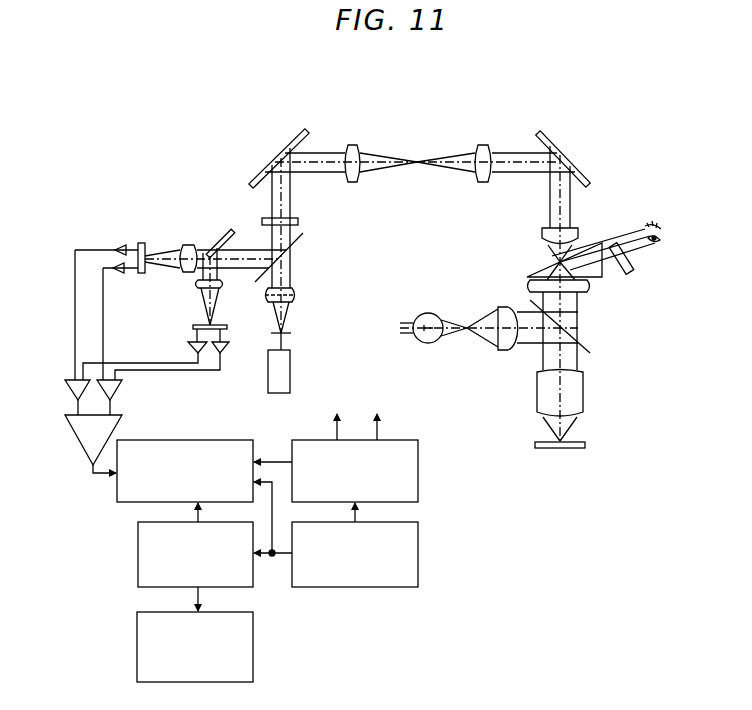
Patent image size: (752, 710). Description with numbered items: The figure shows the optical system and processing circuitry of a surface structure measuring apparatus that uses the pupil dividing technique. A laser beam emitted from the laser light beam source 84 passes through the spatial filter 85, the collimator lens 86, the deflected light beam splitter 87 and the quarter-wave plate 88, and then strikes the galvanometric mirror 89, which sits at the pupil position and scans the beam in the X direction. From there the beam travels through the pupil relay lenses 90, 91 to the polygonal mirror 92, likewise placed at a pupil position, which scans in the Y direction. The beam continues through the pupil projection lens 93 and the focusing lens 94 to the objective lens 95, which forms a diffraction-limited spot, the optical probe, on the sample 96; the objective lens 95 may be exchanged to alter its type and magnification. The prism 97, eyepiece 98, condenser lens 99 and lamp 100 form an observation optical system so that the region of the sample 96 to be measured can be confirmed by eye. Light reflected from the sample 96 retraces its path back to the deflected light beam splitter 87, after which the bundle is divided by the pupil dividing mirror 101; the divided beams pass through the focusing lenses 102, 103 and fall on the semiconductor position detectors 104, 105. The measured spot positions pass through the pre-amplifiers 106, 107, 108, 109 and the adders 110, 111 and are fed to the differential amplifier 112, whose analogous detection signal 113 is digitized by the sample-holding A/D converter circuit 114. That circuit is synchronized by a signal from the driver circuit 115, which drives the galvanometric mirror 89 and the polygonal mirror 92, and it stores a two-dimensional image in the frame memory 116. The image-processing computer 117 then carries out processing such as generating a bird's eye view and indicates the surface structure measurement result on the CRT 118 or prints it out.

The laser light beam source 84 is at (290, 385).
The spatial filter 85 is at (291, 333).
The collimator lens 86 is at (296, 297).
The deflected light beam splitter 87 is at (303, 238).
The λ/4 plate 88 is at (298, 221).
The galvanometric mirror 89 is at (262, 172).
The pupil relay lens 90 is at (352, 145).
The pupil relay lens 91 is at (482, 145).
The polygonal mirror 92 is at (557, 140).
The pupil projection lens 93 is at (544, 234).
The focusing lens 94 is at (529, 284).
The objective lens 95 is at (583, 390).
The sample 96 is at (585, 444).
The prism 97 is at (606, 279).
The eyepiece 98 is at (628, 262).
The condenser lens 99 is at (506, 350).
The lamp 100 is at (424, 343).
The pupil dividing mirror 101 is at (222, 233).
The focusing lens 102 is at (223, 283).
The focusing lens 103 is at (186, 245).
The semiconductor position detector 104 is at (227, 327).
The semiconductor position detector 105 is at (143, 273).
The pre-amplifier 106 is at (187, 348).
The pre-amplifier 107 is at (225, 350).
The pre-amplifier 108 is at (120, 246).
The pre-amplifier 109 is at (118, 272).
The adder 110 is at (66, 390).
The adder 111 is at (122, 388).
The differential amplifier 112 is at (72, 440).
The analogous detection signal 113 is at (98, 476).
The sample-holding A/D converter circuit 114 is at (184, 440).
The driver circuit 115 is at (418, 478).
The frame memory 116 is at (138, 553).
The image-processing computer 117 is at (418, 553).
The CRT 118 is at (253, 650).